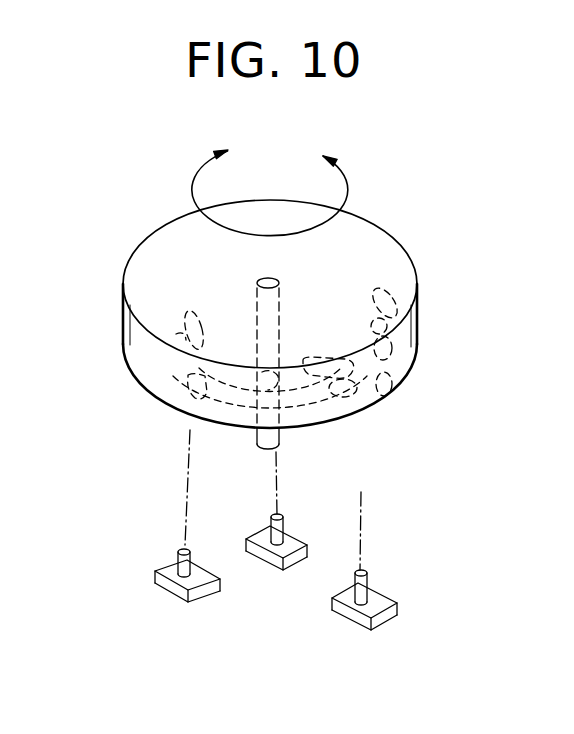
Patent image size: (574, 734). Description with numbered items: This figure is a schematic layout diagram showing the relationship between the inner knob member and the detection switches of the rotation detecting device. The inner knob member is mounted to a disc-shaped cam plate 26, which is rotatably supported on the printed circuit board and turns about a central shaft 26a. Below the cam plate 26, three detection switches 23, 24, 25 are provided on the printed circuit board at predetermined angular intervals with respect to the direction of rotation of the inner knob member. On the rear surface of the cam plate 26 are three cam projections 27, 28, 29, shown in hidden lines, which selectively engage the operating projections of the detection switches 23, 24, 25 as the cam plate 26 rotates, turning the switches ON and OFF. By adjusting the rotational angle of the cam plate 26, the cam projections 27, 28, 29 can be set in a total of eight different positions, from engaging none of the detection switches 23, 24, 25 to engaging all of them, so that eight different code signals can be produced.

The detection switch 23 is at (166, 588).
The detection switch 24 is at (390, 617).
The detection switch 25 is at (270, 563).
The cam plate 26 is at (367, 238).
The shaft 26a is at (280, 440).
The cam projection 27 is at (187, 333).
The cam projection 28 is at (390, 356).
The cam projection 29 is at (385, 292).